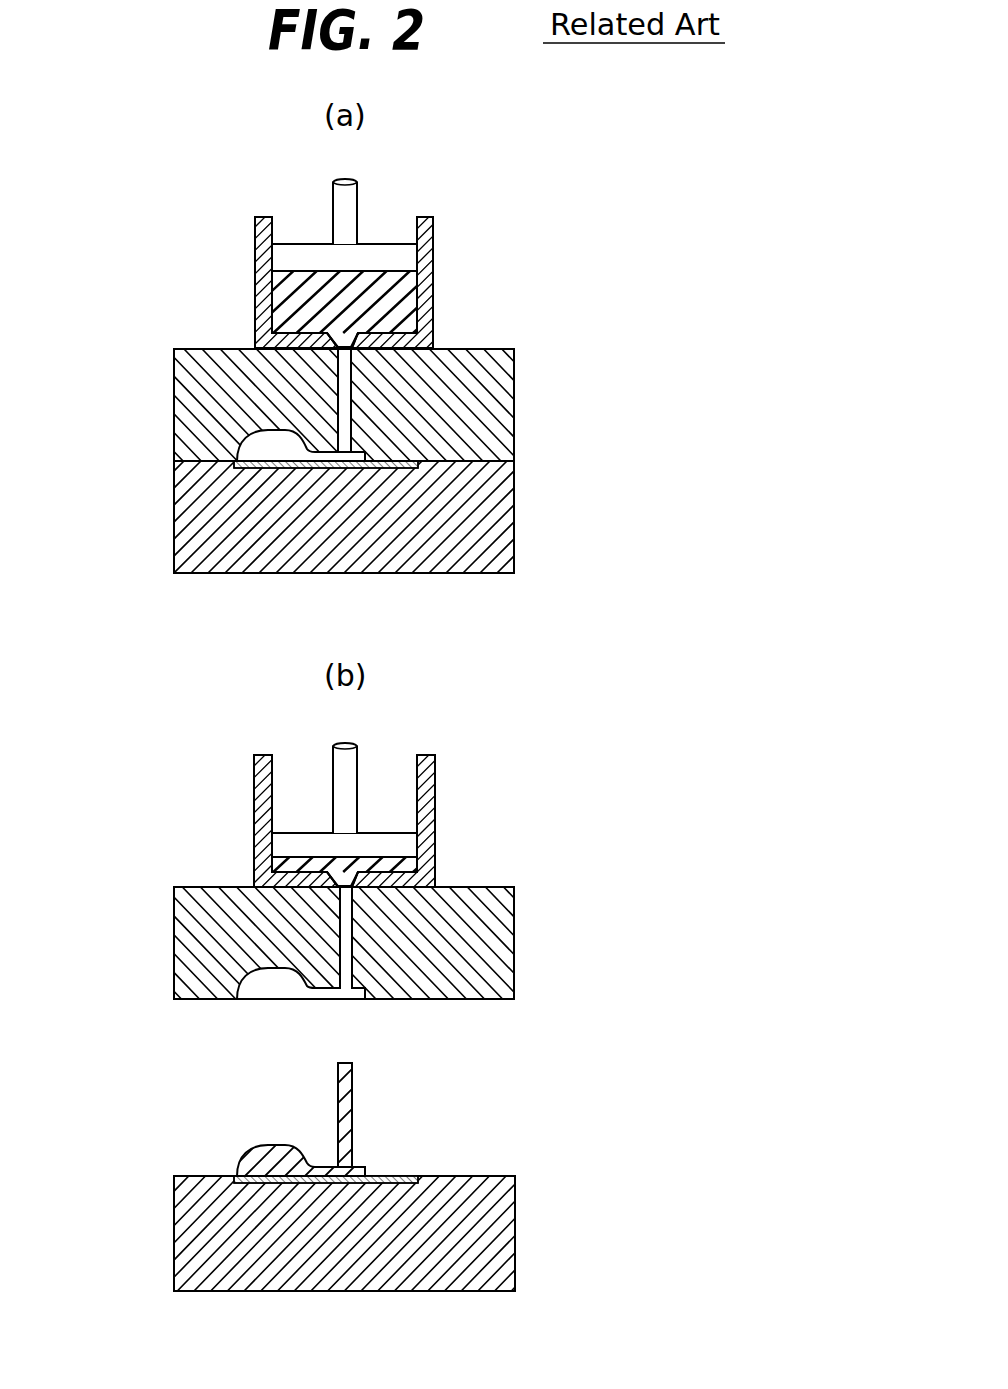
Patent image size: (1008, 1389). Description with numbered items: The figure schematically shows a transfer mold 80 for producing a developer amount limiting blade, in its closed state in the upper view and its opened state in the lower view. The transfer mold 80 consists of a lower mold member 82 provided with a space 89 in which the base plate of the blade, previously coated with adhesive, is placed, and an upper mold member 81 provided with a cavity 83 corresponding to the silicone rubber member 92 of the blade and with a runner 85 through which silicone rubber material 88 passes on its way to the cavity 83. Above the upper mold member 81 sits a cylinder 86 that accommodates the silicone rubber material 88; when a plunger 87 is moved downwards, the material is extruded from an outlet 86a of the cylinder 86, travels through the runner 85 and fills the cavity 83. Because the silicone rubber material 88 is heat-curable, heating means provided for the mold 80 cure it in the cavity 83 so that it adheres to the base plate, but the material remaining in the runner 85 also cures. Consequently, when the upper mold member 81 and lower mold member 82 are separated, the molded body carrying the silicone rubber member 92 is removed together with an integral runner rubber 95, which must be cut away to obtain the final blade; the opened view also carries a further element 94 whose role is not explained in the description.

The transfer mold 80 is at (330, 578).
The upper mold member 81 is at (488, 408).
The lower mold member 82 is at (485, 523).
The cavity 83 is at (253, 445).
The runner 85 is at (347, 397).
The cylinder 86 is at (433, 242).
The outlet 86a is at (338, 380).
The plunger 87 is at (375, 257).
The silicone rubber material 88 is at (330, 295).
The space 89 is at (258, 470).
The silicone rubber member 92 is at (257, 1157).
The cull / runner resin 94 is at (352, 1072).
The runner rubber 95 is at (400, 1178).